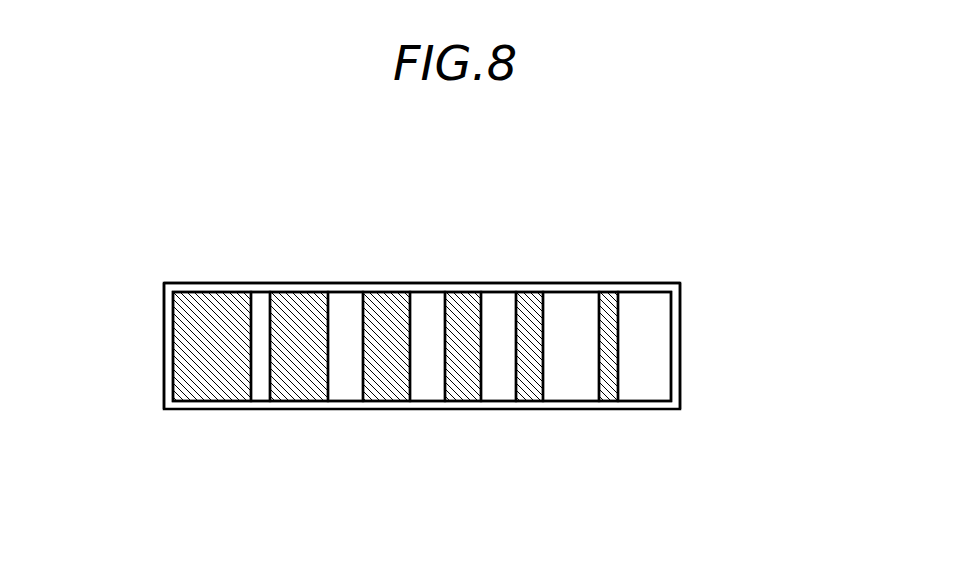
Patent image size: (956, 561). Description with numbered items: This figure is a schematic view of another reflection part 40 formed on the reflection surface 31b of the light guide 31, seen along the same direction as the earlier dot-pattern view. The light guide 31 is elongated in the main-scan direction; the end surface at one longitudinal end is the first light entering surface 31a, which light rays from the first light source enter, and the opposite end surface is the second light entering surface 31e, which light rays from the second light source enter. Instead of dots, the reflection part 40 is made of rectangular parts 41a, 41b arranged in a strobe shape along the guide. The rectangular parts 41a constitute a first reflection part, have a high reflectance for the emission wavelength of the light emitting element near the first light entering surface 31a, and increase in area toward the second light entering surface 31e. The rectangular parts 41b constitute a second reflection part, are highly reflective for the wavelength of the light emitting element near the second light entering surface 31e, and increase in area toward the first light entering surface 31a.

The light guide 31 is at (528, 202).
The first light entering surface 31a is at (164, 332).
The second light entering surface 31e is at (680, 333).
The reflection surface 31b is at (431, 284).
The reflection part 40 is at (670, 482).
The rectangular parts 41a is at (260, 393).
The rectangular parts 41b is at (214, 298).